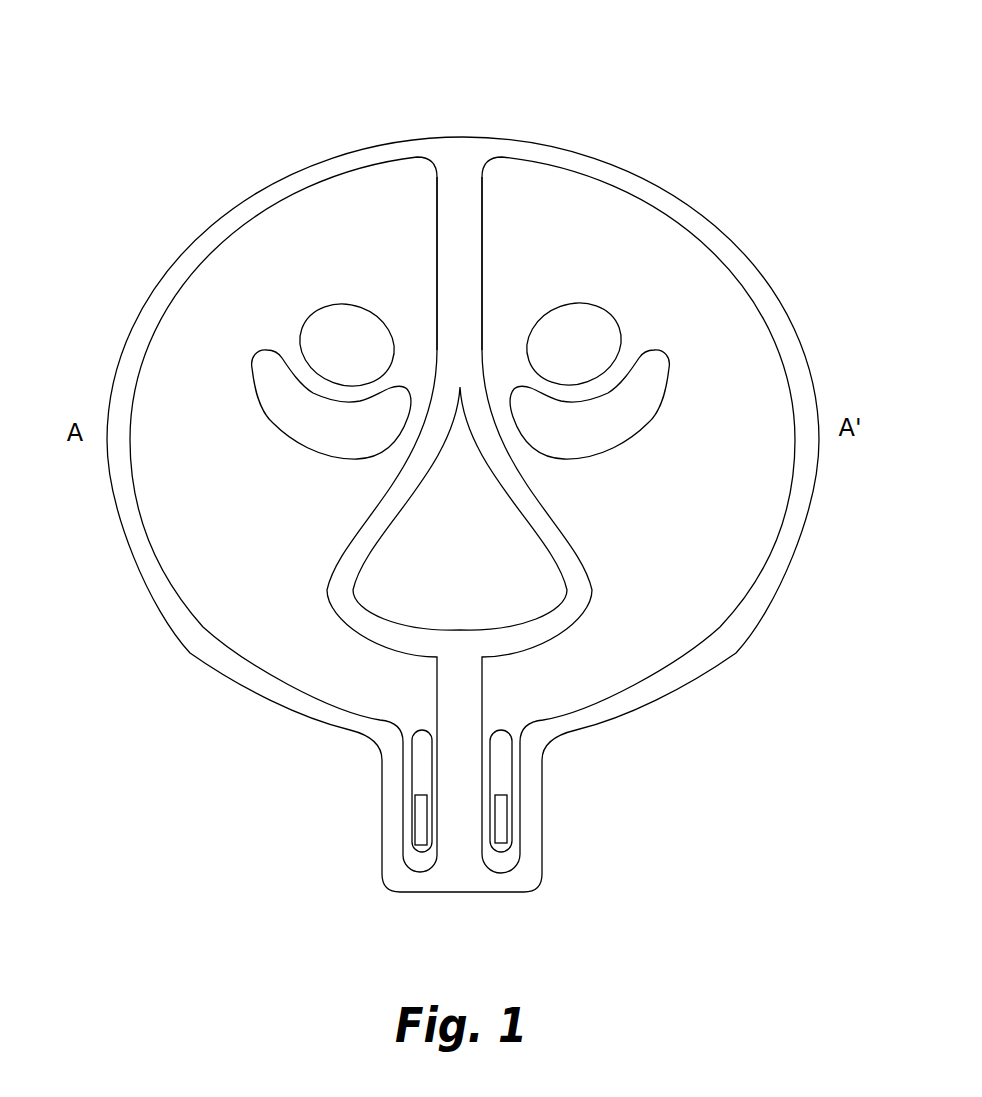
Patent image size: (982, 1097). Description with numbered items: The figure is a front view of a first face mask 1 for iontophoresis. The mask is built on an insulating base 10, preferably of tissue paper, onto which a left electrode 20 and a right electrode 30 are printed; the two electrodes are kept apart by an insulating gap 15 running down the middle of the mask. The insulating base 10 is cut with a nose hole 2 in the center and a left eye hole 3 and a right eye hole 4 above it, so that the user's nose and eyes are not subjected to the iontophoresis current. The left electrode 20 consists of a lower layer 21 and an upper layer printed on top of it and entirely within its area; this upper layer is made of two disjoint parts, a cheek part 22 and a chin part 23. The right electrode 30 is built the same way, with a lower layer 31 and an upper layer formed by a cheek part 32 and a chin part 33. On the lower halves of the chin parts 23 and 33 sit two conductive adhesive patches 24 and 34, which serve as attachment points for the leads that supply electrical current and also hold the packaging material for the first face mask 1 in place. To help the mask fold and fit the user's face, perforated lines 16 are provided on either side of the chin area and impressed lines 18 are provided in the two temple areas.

The first face mask 1 is at (677, 110).
The nose hole 2 is at (460, 508).
The left eye hole 3 is at (347, 345).
The right eye hole 4 is at (574, 344).
The insulating base 10 is at (633, 700).
The insulating gap 15 is at (440, 155).
The perforated lines 16 is at (188, 655).
The impressed lines 18 is at (190, 230).
The left electrode 20 is at (283, 500).
The lower layer 21 is at (283, 514).
The cheek part 22 is at (331, 404).
The chin part 23 is at (418, 755).
The conductive adhesive patch 24 is at (410, 842).
The right electrode 30 is at (638, 483).
The lower layer 31 is at (638, 515).
The cheek part 32 is at (589, 404).
The chin part 33 is at (503, 747).
The conductive adhesive patch 34 is at (500, 827).